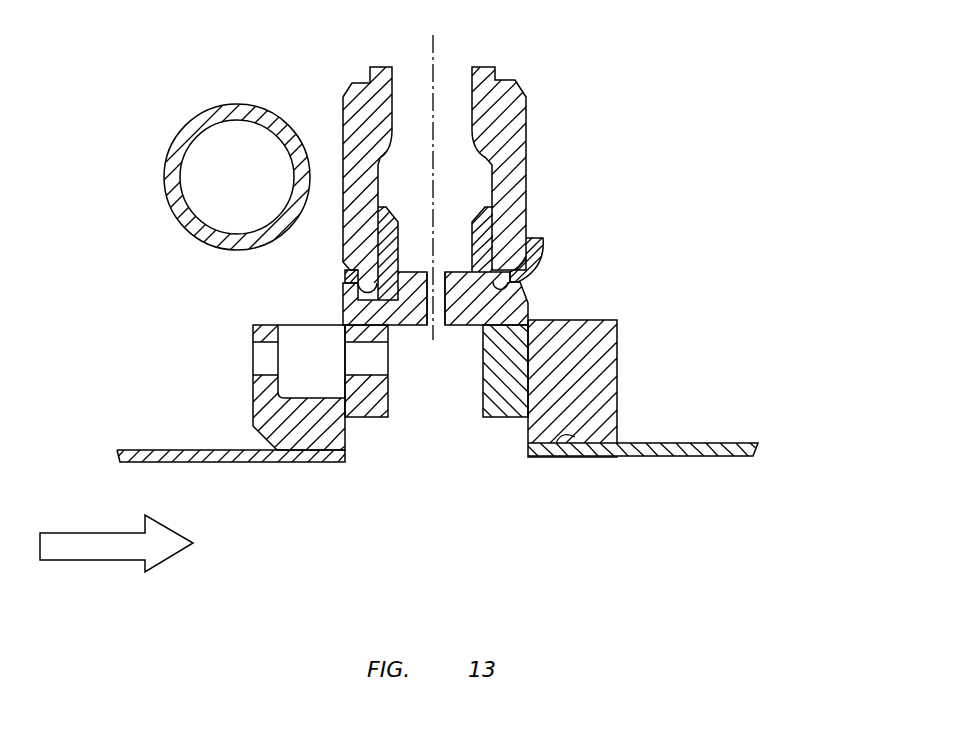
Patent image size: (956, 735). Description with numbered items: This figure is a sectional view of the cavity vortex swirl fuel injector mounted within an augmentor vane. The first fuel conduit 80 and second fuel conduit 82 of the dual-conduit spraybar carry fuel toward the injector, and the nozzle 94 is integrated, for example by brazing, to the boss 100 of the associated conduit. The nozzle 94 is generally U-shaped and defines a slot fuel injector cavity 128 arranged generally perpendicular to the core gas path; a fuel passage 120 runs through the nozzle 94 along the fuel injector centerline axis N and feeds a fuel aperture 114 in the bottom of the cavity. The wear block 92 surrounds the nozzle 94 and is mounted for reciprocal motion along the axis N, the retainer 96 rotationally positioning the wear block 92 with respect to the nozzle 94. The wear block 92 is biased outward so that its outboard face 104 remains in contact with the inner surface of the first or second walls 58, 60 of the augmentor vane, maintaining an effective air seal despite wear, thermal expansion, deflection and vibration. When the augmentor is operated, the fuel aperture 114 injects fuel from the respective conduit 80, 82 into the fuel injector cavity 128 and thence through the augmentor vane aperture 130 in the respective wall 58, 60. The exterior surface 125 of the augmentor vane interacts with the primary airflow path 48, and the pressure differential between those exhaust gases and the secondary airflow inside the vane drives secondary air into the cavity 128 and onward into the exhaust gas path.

The nozzle axis N is at (433, 43).
The first fuel conduit 80 is at (238, 98).
The second fuel conduit 82 is at (481, 168).
The boss 100 is at (517, 157).
The fuel passage 120 is at (470, 199).
The fuel injector cavity 128 is at (462, 384).
The augmentor vane aperture 130 is at (460, 459).
The fuel aperture 114 is at (343, 301).
The retainer 96 is at (546, 250).
The nozzle 94 is at (518, 306).
The wear block 92 is at (580, 380).
The first wall 58 is at (659, 479).
The second wall 60 is at (668, 448).
The outboard face 104 is at (572, 440).
The exterior surface 125 is at (253, 462).
The primary airflow path 48 is at (170, 612).